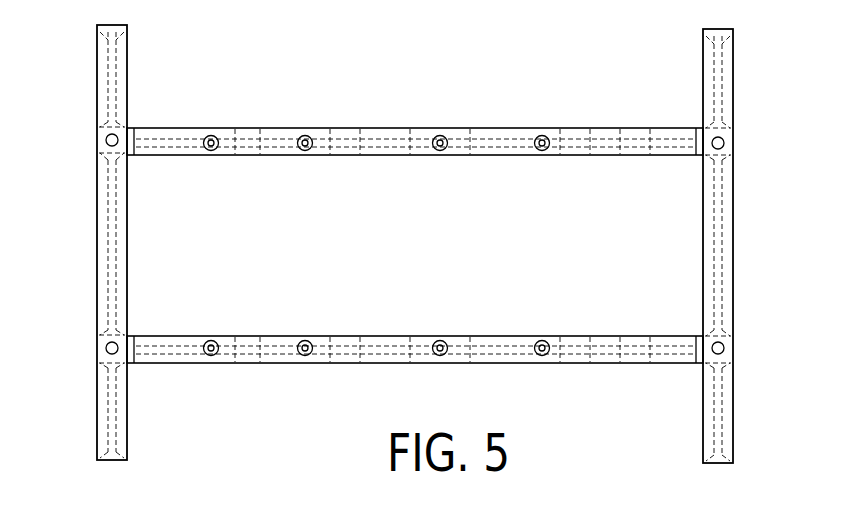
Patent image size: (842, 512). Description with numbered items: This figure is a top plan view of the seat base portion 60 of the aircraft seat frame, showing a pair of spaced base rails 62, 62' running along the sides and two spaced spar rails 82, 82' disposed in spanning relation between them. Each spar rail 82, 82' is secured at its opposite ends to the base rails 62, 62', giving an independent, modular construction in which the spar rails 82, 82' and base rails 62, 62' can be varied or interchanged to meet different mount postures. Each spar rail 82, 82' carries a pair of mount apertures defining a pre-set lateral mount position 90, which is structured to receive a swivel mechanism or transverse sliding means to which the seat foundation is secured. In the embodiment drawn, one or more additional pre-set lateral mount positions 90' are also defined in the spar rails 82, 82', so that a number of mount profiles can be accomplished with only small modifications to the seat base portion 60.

The seat base portion 60 is at (752, 93).
The base rail 62 is at (76, 242).
The base rail 62' is at (752, 246).
The spar rail 82 is at (415, 380).
The spar rail 82' is at (415, 112).
The pre-set lateral mount position 90 is at (507, 196).
The additional pre-set lateral mount position 90' is at (246, 193).